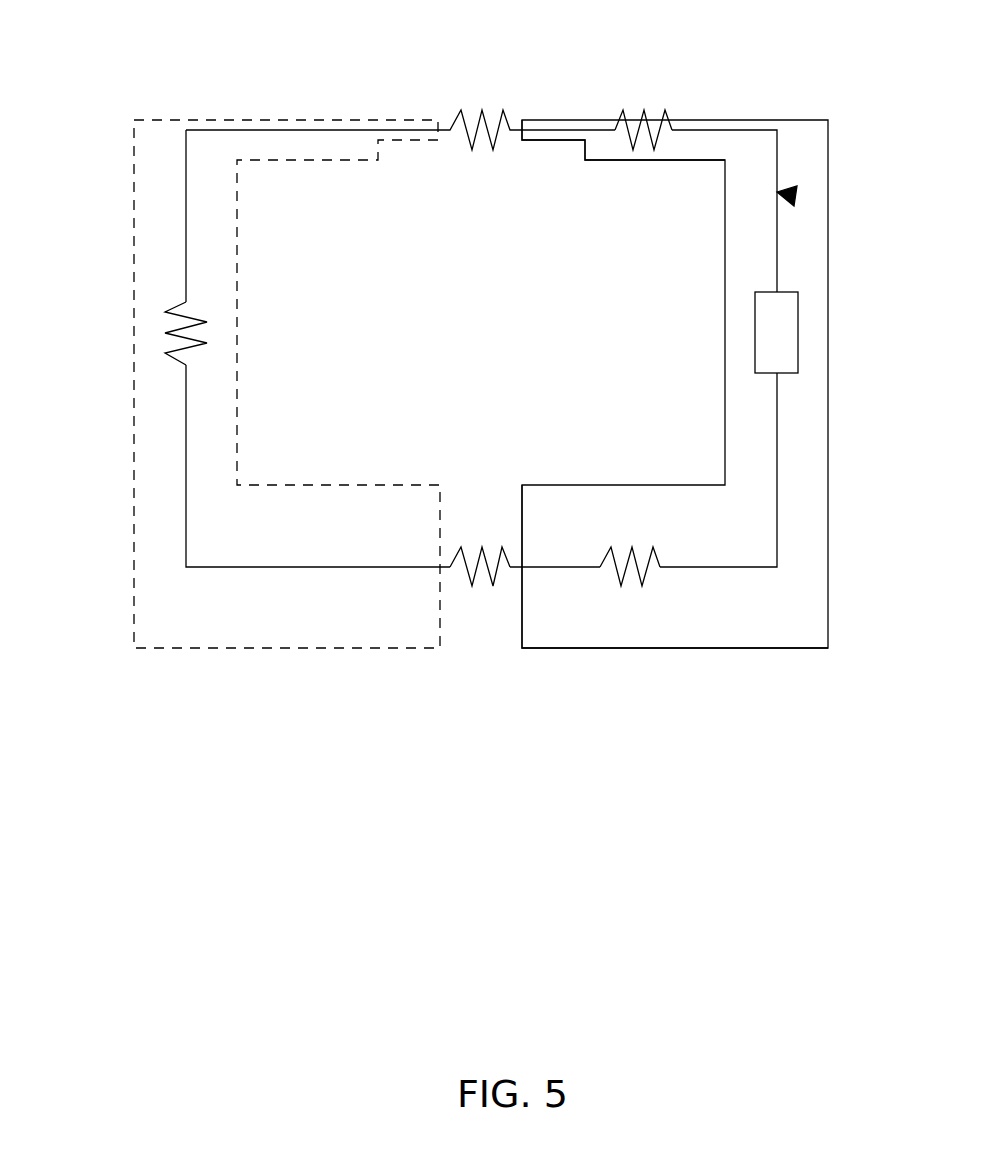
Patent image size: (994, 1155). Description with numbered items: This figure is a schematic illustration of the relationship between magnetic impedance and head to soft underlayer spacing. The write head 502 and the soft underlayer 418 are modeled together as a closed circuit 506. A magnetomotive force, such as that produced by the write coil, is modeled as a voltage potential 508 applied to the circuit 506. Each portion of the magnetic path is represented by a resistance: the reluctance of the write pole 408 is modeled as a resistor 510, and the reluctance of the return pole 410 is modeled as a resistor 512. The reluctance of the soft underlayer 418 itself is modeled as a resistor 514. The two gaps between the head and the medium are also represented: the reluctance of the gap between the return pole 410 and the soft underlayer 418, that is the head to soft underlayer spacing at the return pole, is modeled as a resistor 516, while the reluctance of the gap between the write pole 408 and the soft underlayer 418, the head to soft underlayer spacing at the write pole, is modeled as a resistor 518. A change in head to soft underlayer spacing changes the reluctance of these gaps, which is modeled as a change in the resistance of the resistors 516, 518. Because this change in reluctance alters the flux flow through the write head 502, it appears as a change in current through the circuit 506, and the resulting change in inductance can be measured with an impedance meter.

The soft underlayer 418 is at (152, 147).
The write head 502 is at (795, 130).
The write pole 408 is at (535, 125).
The return pole 410 is at (620, 622).
The resistor 518 is at (458, 112).
The resistor 510 is at (647, 113).
The resistor 512 is at (633, 555).
The resistor 516 is at (473, 582).
The resistor 514 is at (175, 322).
The voltage potential 508 is at (787, 320).
The closed circuit 506 is at (797, 196).